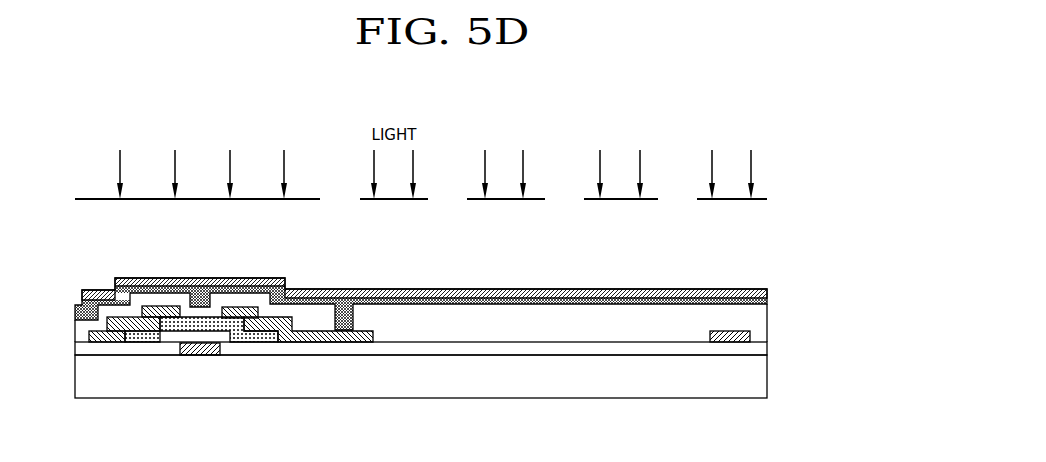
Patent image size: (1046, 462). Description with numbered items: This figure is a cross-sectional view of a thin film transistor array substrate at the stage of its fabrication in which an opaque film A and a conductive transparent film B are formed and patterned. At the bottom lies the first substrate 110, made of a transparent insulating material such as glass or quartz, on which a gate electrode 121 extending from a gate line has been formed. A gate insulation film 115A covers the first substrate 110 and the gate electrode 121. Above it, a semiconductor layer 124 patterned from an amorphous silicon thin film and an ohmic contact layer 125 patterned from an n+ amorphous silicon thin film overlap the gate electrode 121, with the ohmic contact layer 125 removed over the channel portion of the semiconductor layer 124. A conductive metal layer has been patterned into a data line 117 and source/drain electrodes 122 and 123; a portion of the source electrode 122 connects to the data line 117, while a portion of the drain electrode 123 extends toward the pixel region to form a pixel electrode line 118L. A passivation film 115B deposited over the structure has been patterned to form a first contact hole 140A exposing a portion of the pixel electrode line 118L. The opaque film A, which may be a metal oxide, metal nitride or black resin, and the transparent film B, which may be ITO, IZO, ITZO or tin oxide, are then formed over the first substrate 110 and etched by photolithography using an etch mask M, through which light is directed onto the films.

The first substrate 110 is at (767, 379).
The gate insulation film 115A is at (768, 349).
The passivation film 115B is at (768, 322).
The data line 117 is at (110, 342).
The pixel electrode line 118L is at (327, 342).
The gate electrode 121 is at (198, 355).
The source electrode 122 is at (167, 305).
The drain electrode 123 is at (237, 306).
The semiconductor layer 124 is at (262, 342).
The ohmic contact layer 125 is at (148, 342).
The first contact hole 140A is at (353, 317).
The etch mask M is at (740, 200).
The opaque film A is at (587, 289).
The conductive transparent film B is at (523, 289).